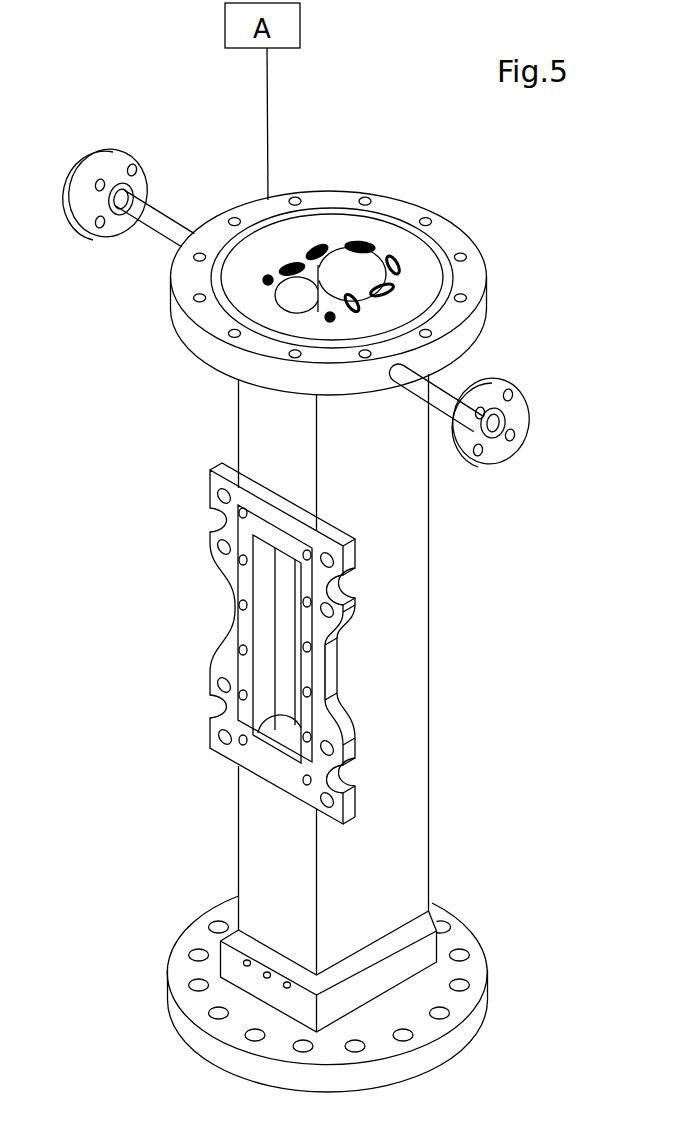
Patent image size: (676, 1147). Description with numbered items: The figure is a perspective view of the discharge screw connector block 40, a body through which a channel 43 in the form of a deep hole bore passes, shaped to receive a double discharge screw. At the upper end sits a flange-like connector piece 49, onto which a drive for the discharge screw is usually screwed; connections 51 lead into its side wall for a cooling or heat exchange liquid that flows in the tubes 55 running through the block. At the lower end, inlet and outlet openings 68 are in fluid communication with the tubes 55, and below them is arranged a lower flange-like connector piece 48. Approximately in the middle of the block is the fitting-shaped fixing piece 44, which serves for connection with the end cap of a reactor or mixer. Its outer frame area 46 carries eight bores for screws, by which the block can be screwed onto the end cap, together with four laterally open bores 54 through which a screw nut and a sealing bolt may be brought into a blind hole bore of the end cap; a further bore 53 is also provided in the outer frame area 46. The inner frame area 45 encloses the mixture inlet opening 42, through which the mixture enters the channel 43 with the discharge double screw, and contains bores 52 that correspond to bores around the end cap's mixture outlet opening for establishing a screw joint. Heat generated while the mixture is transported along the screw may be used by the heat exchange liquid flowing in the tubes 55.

The discharge screw connector block 40 is at (500, 606).
The mixture inlet opening 42 is at (260, 627).
The channel 43 is at (342, 262).
The fitting-shaped fixing piece 44 is at (208, 484).
The inner frame area 45 is at (245, 582).
The outer frame area 46 is at (208, 722).
The lower flange-like connector piece 48 is at (400, 1070).
The flange-like connector piece 49 is at (477, 283).
The connections 51 is at (83, 190).
The bores 52 is at (313, 653).
The bore 53 is at (329, 803).
The laterally open bores 54 is at (347, 588).
The tubes 55 is at (385, 246).
The inlet and outlet openings 68 is at (244, 963).